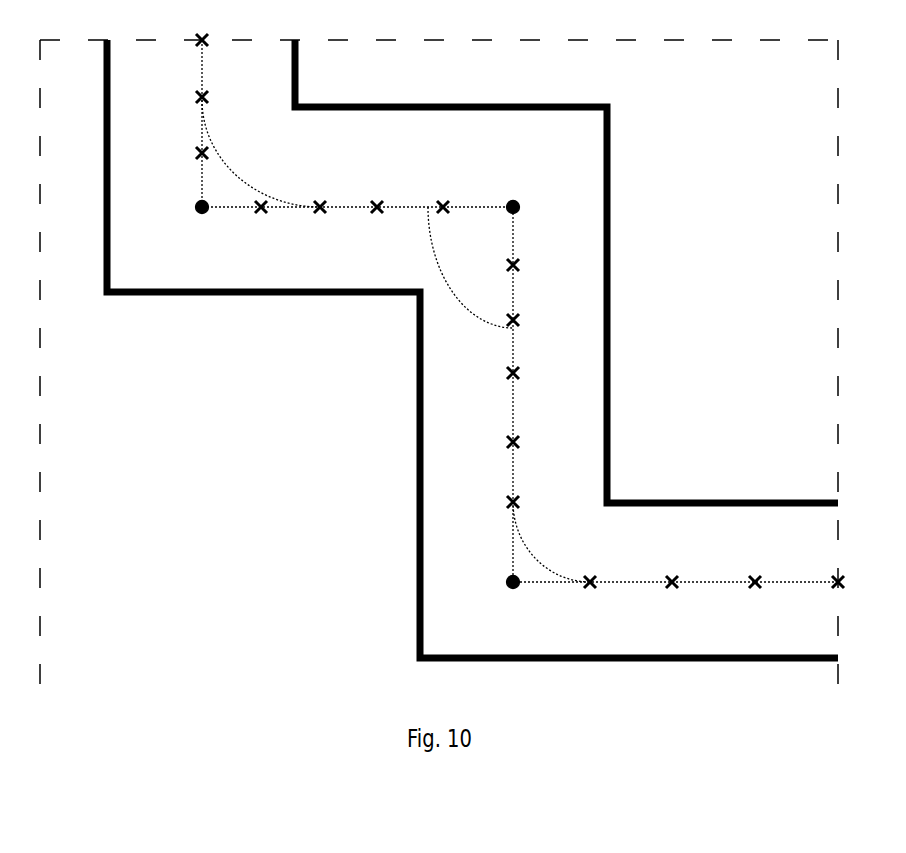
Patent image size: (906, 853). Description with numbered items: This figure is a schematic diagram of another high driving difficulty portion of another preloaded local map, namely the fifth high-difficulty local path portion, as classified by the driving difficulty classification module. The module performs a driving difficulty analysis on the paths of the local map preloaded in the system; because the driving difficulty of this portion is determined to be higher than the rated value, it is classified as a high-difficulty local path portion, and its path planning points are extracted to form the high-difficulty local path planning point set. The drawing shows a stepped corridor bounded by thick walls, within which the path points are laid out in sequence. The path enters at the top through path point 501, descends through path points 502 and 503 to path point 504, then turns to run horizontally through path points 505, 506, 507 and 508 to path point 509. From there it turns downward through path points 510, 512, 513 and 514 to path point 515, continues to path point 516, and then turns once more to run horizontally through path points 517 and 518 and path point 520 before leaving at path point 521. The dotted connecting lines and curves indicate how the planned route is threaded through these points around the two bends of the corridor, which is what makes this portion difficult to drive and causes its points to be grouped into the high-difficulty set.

The path point of the fifth high-difficulty local path portion 501 is at (198, 43).
The path point of the fifth high-difficulty local path portion 502 is at (208, 97).
The path point of the fifth high-difficulty local path portion 503 is at (208, 153).
The path point of the fifth high-difficulty local path portion 504 is at (198, 213).
The path point of the fifth high-difficulty local path portion 505 is at (262, 213).
The path point of the fifth high-difficulty local path portion 506 is at (322, 213).
The path point of the fifth high-difficulty local path portion 507 is at (378, 201).
The path point of the fifth high-difficulty local path portion 508 is at (441, 213).
The path point of the fifth high-difficulty local path portion 509 is at (519, 202).
The path point of the fifth high-difficulty local path portion 510 is at (519, 263).
The path point of the fifth high-difficulty local path portion 512 is at (519, 318).
The path point of the fifth high-difficulty local path portion 513 is at (519, 373).
The path point of the fifth high-difficulty local path portion 514 is at (519, 442).
The path point of the fifth high-difficulty local path portion 515 is at (507, 502).
The path point of the fifth high-difficulty local path portion 516 is at (507, 584).
The path point of the fifth high-difficulty local path portion 517 is at (593, 586).
The path point of the fifth high-difficulty local path portion 518 is at (675, 586).
The path point of the fifth high-difficulty local path portion 520 is at (755, 577).
The path point of the fifth high-difficulty local path portion 521 is at (834, 586).